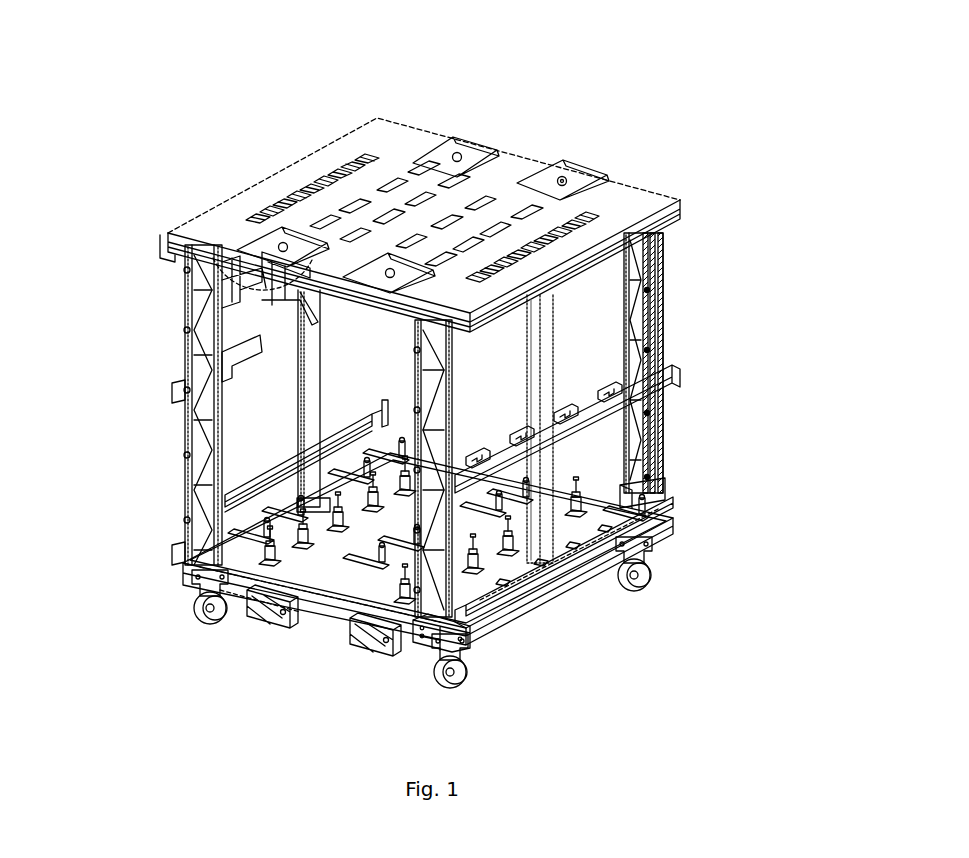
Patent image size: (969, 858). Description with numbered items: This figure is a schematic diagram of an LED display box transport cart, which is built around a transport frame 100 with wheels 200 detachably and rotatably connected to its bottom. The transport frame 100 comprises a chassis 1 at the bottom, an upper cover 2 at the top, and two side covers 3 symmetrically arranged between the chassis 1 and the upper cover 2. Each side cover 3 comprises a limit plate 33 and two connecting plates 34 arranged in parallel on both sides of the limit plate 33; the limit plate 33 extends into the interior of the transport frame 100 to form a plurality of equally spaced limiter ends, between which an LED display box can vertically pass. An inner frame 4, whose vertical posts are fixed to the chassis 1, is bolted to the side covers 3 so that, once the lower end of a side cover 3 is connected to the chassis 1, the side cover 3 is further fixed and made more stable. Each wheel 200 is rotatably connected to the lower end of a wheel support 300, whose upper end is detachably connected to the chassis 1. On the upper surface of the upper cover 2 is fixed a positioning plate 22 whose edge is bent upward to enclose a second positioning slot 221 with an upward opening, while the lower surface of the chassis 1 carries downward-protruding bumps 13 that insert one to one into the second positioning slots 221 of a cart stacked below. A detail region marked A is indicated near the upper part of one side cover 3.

The transport frame 100 is at (280, 166).
The chassis 1 is at (360, 597).
The bump 13 is at (268, 615).
The upper cover 2 is at (617, 190).
The positioning plate 22 is at (585, 163).
The second positioning slot 221 is at (553, 176).
The side cover 3 is at (797, 277).
The limit plate 33 is at (643, 427).
The connecting plate 34 is at (647, 333).
The inner frame 4 is at (307, 422).
The wheel 200 is at (467, 673).
The wheel support 300 is at (453, 657).
The detail region A is at (193, 273).